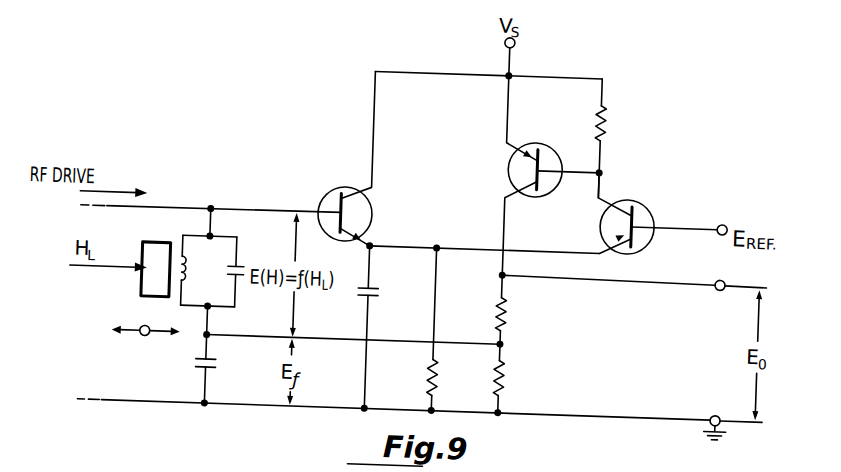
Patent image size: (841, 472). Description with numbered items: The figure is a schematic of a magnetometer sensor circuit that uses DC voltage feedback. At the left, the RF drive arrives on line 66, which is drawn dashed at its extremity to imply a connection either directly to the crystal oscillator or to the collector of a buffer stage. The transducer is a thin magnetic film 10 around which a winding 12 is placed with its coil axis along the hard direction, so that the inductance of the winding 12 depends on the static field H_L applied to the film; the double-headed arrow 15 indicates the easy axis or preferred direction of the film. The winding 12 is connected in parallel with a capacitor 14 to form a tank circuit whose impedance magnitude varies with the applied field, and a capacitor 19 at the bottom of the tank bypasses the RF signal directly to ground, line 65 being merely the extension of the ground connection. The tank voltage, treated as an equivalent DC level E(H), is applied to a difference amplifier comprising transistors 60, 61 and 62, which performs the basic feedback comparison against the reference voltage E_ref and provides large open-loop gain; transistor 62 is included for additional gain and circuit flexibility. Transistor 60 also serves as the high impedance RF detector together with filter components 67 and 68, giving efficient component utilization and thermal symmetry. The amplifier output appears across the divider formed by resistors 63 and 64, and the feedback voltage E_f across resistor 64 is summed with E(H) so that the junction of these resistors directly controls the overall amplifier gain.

The thin magnetic film 10 is at (148, 261).
The winding 12 is at (188, 278).
The capacitor 14 is at (233, 281).
The double-headed arrow 15 is at (148, 344).
The capacitor 19 is at (222, 372).
The transistor 60 is at (369, 215).
The transistor 61 is at (600, 216).
The transistor 62 is at (506, 162).
The resistor 63 is at (515, 312).
The resistor 64 is at (513, 379).
The line 65 is at (150, 410).
The line 66 is at (177, 213).
The filter component 67 is at (384, 295).
The filter component 68 is at (445, 379).